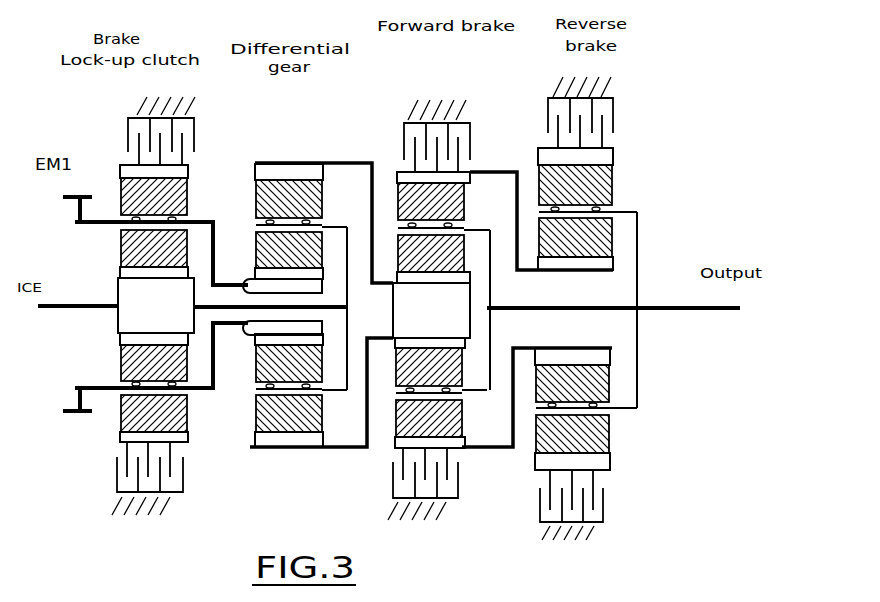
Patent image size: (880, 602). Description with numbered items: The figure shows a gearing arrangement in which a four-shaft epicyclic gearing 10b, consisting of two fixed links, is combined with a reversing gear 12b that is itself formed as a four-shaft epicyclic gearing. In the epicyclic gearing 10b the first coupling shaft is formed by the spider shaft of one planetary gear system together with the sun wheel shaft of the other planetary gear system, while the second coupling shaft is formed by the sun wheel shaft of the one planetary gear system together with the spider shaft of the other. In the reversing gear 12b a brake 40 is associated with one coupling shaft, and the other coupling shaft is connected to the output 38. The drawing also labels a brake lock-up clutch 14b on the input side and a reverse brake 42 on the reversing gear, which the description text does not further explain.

The four-shaft epicyclic gearing 10b is at (117, 98).
The reversing gear 12b is at (635, 80).
The brake lock-up clutch 14b is at (115, 473).
The output 38 is at (728, 310).
The brake 40 is at (458, 477).
The reverse brake 42 is at (605, 498).